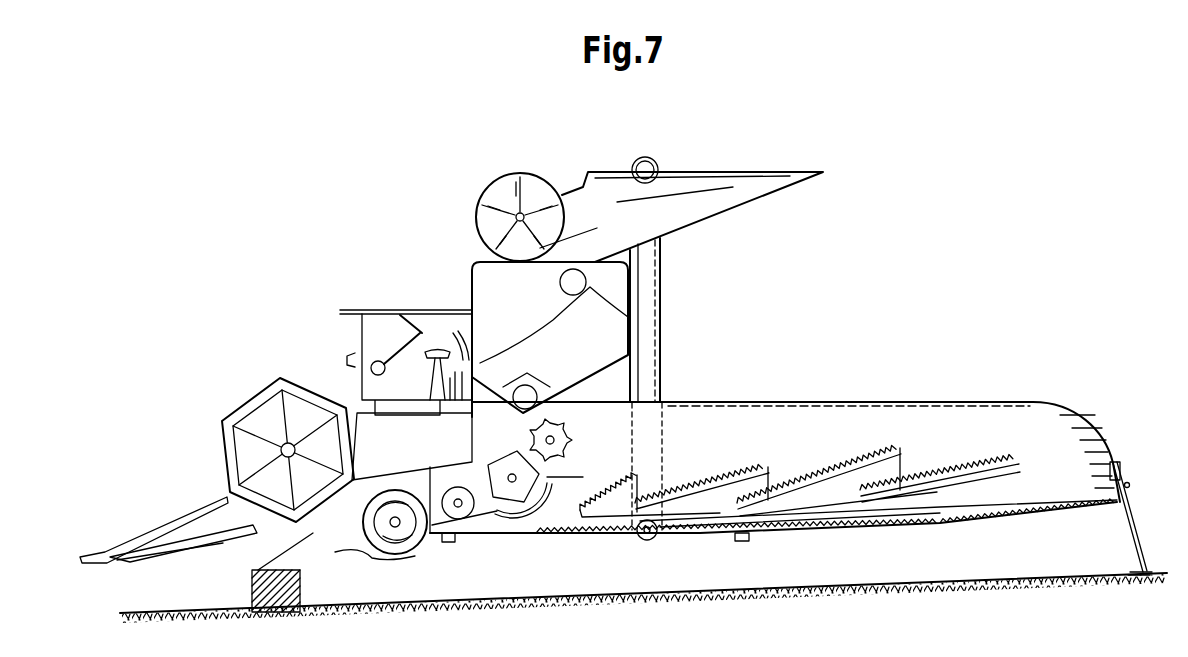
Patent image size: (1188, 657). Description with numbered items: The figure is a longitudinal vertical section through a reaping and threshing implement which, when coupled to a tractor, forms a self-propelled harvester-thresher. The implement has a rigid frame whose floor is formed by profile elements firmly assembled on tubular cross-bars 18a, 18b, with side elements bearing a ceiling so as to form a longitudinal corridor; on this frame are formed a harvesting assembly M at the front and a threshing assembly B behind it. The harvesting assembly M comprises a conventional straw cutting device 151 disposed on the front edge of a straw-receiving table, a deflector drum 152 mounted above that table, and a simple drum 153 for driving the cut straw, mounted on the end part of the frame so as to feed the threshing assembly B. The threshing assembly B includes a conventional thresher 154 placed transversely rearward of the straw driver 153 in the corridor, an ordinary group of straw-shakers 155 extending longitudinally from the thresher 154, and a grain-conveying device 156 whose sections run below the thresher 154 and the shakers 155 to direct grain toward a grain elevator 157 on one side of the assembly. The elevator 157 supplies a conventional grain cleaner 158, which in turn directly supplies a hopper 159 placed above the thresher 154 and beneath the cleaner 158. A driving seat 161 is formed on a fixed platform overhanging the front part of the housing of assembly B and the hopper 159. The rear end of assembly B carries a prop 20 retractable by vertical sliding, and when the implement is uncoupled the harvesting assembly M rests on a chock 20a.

The grain cleaner 158 is at (567, 185).
The hopper 159 is at (493, 283).
The driving seat 161 is at (348, 306).
The grain elevator 157 is at (652, 282).
The threshing assembly B is at (767, 423).
The straw-shakers 155 is at (834, 470).
The grain-conveying device 156 is at (831, 511).
The prop 20 is at (1126, 515).
The harvesting assembly M is at (222, 484).
The straw cutting device 151 is at (250, 548).
The chock 20a is at (282, 589).
The deflector drum 152 is at (383, 556).
The drum for driving the cut straw 153 is at (453, 480).
The thresher 154 is at (541, 527).
The tubular cross-bar 18a is at (448, 544).
The tubular cross-bar 18b is at (745, 542).